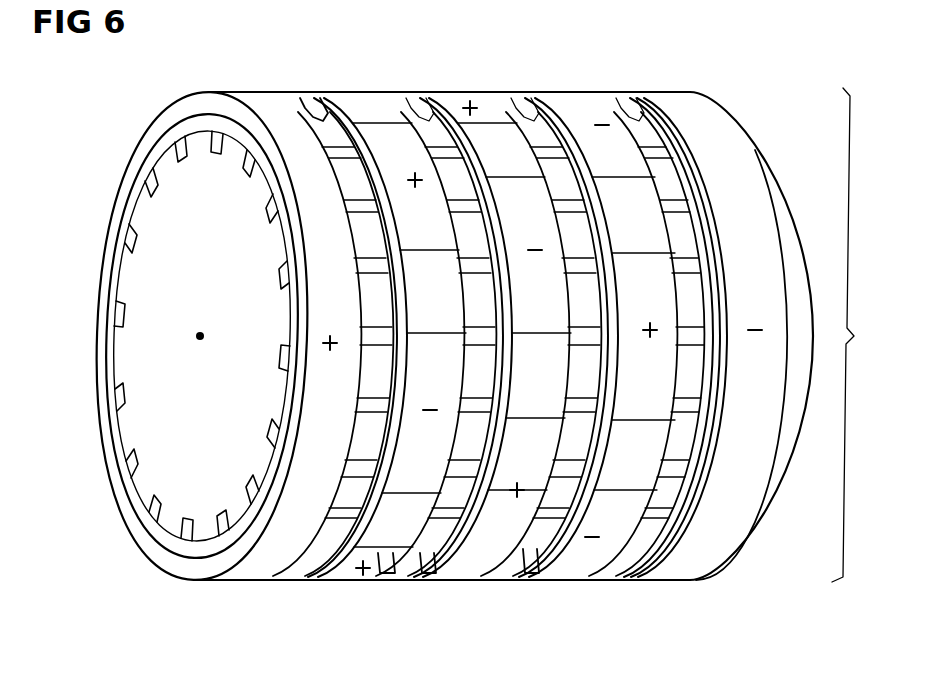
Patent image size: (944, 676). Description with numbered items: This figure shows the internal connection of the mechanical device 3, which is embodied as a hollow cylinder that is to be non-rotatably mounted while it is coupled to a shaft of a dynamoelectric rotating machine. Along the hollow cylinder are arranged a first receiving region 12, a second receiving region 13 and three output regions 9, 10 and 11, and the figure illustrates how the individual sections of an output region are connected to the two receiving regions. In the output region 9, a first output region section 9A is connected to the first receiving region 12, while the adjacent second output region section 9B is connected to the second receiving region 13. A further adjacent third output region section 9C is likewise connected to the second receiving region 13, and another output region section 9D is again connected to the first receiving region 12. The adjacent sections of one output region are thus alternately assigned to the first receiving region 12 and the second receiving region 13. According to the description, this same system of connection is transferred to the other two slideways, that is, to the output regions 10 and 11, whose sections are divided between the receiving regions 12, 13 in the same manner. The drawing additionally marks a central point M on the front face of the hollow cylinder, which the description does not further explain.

The mechanical device 3 is at (851, 335).
The output region 9 is at (360, 588).
The first output region section 9A is at (436, 226).
The second output region section 9B is at (448, 390).
The third output region section 9C is at (316, 97).
The output region section 9D is at (378, 580).
The output region 10 is at (465, 588).
The output region 11 is at (575, 588).
The first receiving region 12 is at (263, 577).
The second receiving region 13 is at (689, 560).
The center axis point M is at (201, 332).